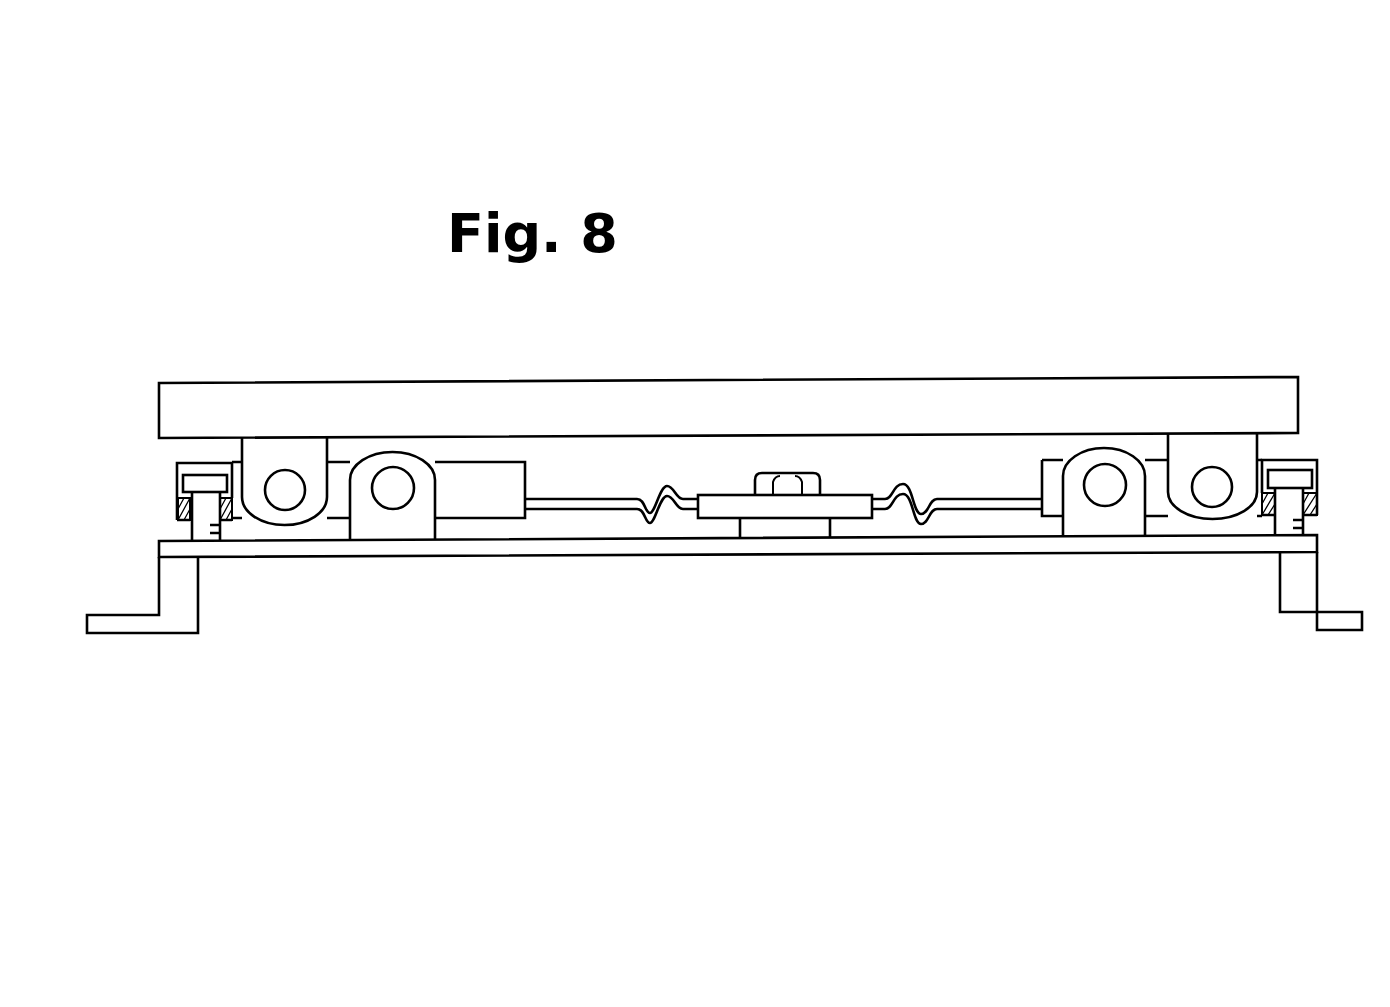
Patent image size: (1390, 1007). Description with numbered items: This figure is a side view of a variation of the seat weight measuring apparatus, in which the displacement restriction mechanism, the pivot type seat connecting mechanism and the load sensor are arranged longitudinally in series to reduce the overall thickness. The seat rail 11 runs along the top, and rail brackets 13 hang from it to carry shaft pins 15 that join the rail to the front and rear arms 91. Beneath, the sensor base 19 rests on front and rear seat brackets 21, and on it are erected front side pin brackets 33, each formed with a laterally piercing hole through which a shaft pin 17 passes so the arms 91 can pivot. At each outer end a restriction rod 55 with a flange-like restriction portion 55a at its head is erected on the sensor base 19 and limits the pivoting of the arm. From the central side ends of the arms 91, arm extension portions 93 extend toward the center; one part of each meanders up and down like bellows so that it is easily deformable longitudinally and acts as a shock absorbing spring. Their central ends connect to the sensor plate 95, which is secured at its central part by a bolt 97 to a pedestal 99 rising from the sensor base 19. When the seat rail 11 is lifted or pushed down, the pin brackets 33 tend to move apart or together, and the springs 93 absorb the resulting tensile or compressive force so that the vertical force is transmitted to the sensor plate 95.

The seat rail 11 is at (708, 405).
The rail bracket 13 is at (273, 446).
The shaft pin 15 is at (285, 495).
The shaft pin 17 is at (393, 477).
The sensor base 19 is at (603, 548).
The seat bracket 21 is at (177, 598).
The front side pin bracket 33 is at (381, 522).
The restriction rod 55 is at (203, 504).
The restriction portion 55a is at (187, 485).
The arm 91 is at (463, 485).
The arm extension portion 93 is at (594, 499).
The sensor plate 95 is at (838, 500).
The bolt 97 is at (782, 486).
The pedestal 99 is at (775, 528).